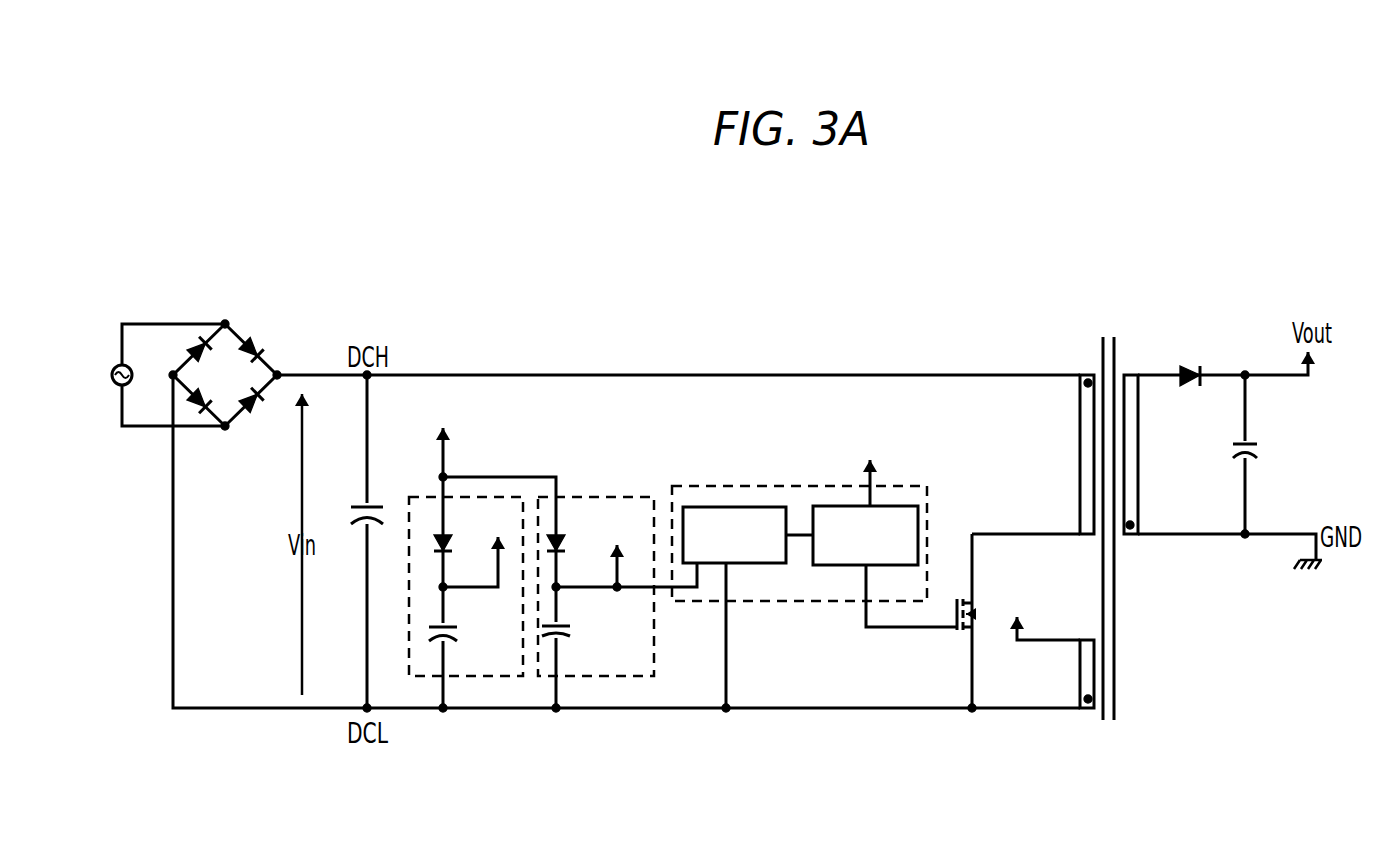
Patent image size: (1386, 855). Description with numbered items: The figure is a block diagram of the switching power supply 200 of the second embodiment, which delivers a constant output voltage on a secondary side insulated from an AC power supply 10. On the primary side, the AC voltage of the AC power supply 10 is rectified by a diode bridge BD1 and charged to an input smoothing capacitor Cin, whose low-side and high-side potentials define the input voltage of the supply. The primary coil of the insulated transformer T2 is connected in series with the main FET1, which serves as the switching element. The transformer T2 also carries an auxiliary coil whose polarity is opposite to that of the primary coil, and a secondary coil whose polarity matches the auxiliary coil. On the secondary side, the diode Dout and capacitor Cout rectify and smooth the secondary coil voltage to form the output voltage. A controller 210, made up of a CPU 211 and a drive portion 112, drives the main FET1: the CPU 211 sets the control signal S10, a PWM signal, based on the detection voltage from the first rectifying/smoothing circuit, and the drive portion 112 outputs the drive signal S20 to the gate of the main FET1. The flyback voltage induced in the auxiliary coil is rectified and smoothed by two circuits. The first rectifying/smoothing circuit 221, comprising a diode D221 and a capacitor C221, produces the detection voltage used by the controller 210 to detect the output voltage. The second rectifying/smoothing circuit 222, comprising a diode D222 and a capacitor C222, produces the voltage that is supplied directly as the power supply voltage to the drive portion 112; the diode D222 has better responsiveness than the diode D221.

The AC power supply 10 is at (112, 367).
The diode bridge BD1 is at (264, 330).
The switching power supply 200 is at (693, 732).
The input smoothing capacitor Cin is at (362, 509).
The second rectifying/smoothing circuit 222 is at (469, 554).
The second diode D222 is at (436, 532).
The second capacitor C222 is at (454, 628).
The first rectifying/smoothing circuit 221 is at (617, 554).
The first diode D221 is at (565, 533).
The first capacitor C221 is at (572, 630).
The controller 210 is at (812, 551).
The CPU 211 is at (712, 506).
The drive portion 112 is at (905, 505).
The control signal S10 is at (802, 528).
The drive signal S20 is at (878, 632).
The main FET FET1 is at (973, 606).
The transformer T2 is at (1098, 360).
The diode Dout is at (1179, 364).
The capacitor Cout is at (1232, 449).